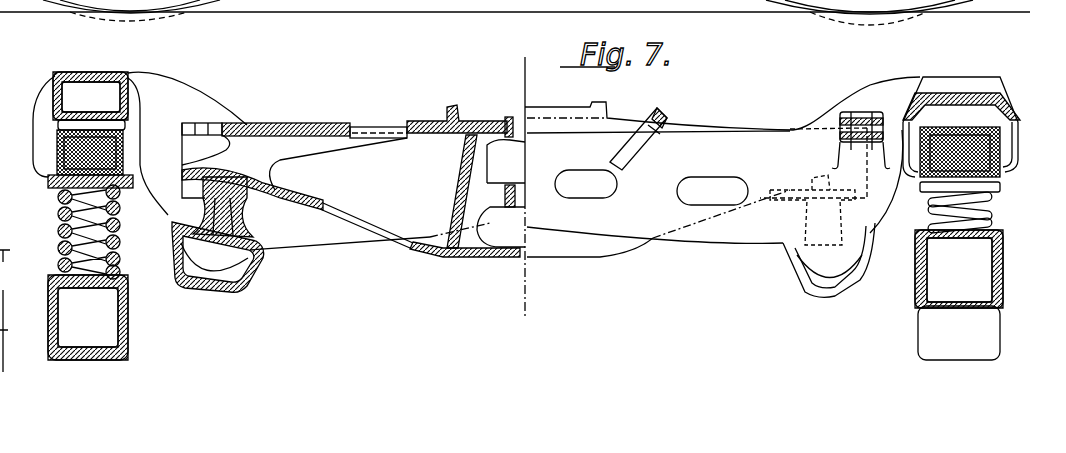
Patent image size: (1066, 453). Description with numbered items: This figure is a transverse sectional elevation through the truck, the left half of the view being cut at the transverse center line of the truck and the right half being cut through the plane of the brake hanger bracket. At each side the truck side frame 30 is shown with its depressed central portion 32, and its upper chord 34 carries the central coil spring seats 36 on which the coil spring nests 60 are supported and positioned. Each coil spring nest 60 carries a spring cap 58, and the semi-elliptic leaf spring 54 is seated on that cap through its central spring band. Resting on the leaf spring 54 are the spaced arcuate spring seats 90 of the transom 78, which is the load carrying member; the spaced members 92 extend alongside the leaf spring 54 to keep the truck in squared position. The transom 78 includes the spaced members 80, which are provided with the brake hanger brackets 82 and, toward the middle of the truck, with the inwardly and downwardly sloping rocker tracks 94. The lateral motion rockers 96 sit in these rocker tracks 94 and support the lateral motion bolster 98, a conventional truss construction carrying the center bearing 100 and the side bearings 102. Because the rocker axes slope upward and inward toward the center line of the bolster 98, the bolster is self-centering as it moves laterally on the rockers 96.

The truck side frame 30 is at (917, 302).
The depressed central portion 32 is at (128, 322).
The upper chord 34 is at (90, 282).
The central coil spring seats 36 is at (122, 274).
The semi-elliptic leaf spring 54 is at (68, 158).
The spring cap 58 is at (54, 188).
The coil spring nests 60 is at (64, 238).
The transom 78 is at (880, 88).
The spaced members 80 is at (170, 88).
The brake hanger brackets 82 is at (843, 127).
The arcuate spring seats 90 is at (962, 128).
The spaced members 92 is at (40, 116).
The rocker tracks 94 is at (227, 267).
The lateral motion rockers 96 is at (243, 218).
The lateral motion bolster 98 is at (311, 142).
The center bearing 100 is at (465, 107).
The side bearings 102 is at (247, 127).